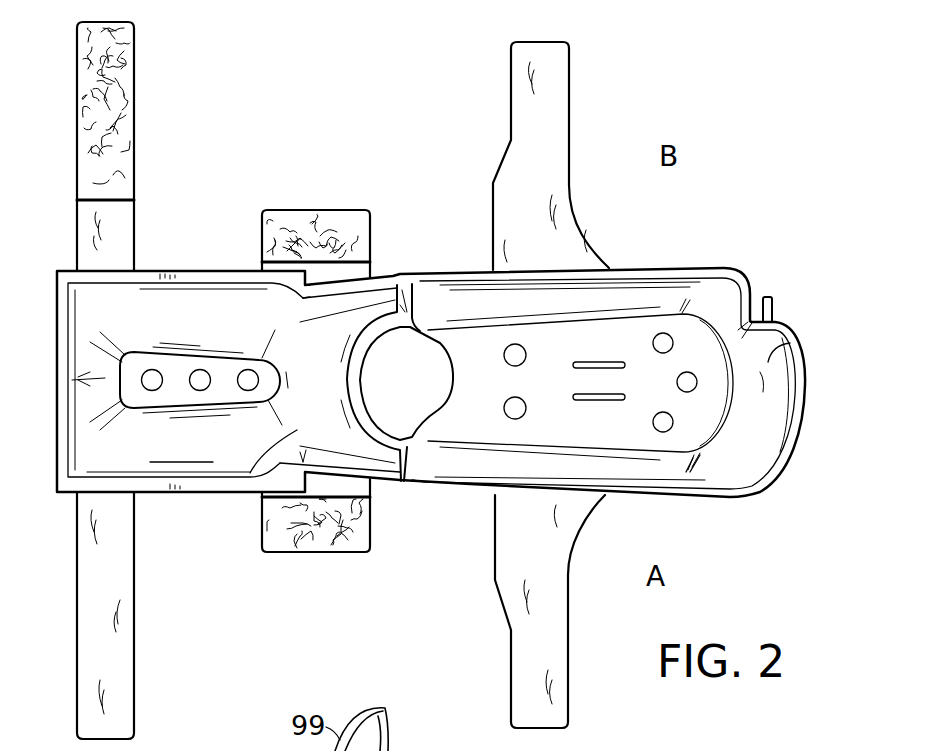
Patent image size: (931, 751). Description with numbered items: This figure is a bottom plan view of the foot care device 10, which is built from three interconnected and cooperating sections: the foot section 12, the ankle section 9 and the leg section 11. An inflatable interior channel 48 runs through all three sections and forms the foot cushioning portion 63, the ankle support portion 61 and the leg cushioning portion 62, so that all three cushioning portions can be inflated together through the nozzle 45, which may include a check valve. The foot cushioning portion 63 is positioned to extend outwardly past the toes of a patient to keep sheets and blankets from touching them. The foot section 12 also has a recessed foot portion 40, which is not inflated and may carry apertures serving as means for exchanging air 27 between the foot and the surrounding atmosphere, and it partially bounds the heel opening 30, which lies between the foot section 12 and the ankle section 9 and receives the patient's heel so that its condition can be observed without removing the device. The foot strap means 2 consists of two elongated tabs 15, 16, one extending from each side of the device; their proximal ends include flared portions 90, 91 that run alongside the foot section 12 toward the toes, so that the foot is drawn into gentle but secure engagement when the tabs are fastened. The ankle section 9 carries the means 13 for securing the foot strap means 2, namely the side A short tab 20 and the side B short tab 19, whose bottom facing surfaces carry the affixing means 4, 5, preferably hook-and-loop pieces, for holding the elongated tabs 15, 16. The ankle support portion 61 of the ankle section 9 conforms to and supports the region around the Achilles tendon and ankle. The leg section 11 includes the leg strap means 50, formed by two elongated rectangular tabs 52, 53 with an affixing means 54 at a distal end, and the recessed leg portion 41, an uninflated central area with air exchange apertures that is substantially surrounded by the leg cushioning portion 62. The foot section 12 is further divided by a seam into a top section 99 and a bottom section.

The foot strap means 2 is at (577, 177).
The means for affixing elongated tab 4 is at (370, 540).
The means for affixing elongated tab 5 is at (319, 192).
The ankle section 9 is at (306, 167).
The foot care device 10 is at (597, 82).
The leg section 11 is at (231, 339).
The foot section 12 is at (631, 357).
The means for securing foot strap means 13 is at (338, 555).
The elongated tab 15 is at (560, 650).
The elongated tab 16 is at (520, 100).
The short tab 19 is at (265, 271).
The short tab 20 is at (370, 490).
The means for exchanging air 27 is at (712, 420).
The heel opening 30 is at (402, 344).
The recessed foot portion 40 is at (647, 310).
The recessed leg portion 41 is at (175, 375).
The nozzle 45 is at (768, 298).
The inflatable interior channel 48 is at (770, 358).
The leg strap means 50 is at (106, 380).
The elongated rectangular tab 52 is at (118, 660).
The elongated rectangular tab 53 is at (88, 230).
The affixing means 54 is at (88, 72).
The ankle support portion 61 is at (250, 473).
The leg cushioning portion 62 is at (192, 442).
The foot cushioning portion 63 is at (668, 468).
The flared portion 90 is at (580, 515).
The flared portion 91 is at (592, 232).
The top section 99 is at (763, 400).